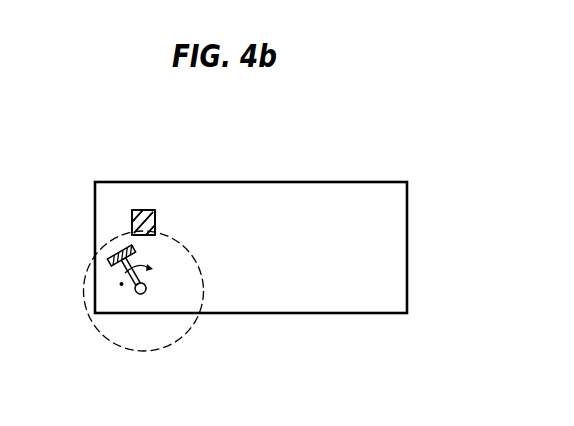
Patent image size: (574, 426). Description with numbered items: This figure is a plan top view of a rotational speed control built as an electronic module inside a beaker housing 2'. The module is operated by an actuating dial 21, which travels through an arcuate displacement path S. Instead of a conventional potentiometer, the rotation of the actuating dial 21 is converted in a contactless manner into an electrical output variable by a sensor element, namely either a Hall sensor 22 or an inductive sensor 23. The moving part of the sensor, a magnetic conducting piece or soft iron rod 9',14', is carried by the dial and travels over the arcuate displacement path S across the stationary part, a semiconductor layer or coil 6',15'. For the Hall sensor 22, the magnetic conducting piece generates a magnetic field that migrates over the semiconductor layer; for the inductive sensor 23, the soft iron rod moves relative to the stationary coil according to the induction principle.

The beaker housing 2' is at (251, 233).
The stationary semiconductor layer / coil 6',15' is at (201, 193).
The magnetic conducting piece / soft iron rod 9',14' is at (91, 258).
The actuating dial 21 is at (102, 344).
The Hall sensor 22 is at (111, 224).
The inductive sensor 23 is at (124, 207).
The arcuate displacement path S is at (121, 284).